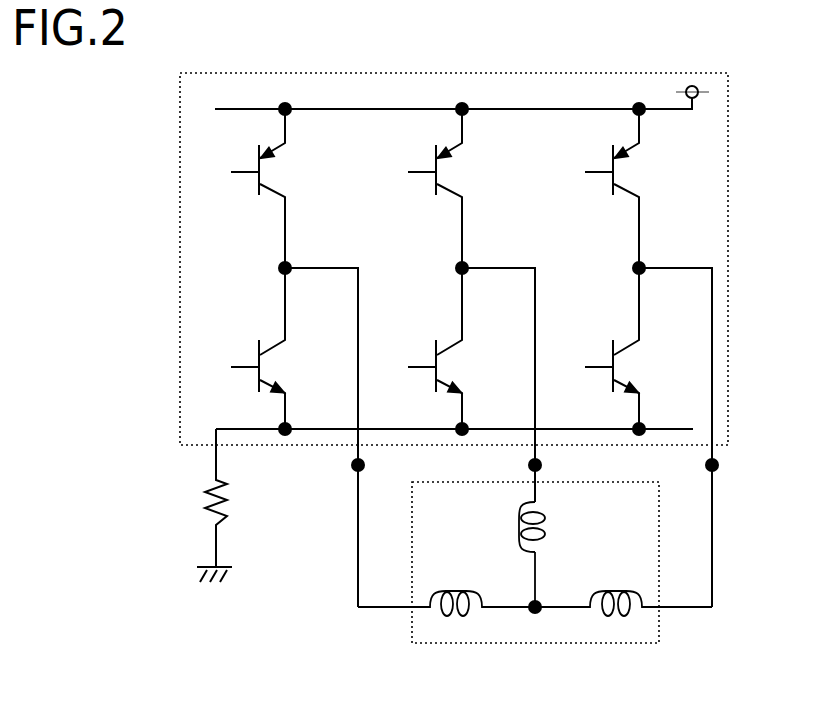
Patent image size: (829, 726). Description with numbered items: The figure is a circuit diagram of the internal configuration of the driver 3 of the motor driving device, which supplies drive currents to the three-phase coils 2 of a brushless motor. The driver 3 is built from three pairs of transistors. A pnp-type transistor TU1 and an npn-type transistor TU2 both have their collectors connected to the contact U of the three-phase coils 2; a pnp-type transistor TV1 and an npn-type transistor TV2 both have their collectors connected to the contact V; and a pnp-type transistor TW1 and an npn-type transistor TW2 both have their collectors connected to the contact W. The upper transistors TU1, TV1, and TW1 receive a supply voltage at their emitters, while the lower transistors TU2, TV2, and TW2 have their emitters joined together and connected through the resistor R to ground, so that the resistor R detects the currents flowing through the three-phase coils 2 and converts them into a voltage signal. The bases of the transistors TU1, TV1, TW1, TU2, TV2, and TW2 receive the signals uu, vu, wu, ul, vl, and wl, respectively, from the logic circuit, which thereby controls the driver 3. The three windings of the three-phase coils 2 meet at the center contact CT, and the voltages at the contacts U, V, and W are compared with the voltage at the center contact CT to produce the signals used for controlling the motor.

The three-phase coils 2 is at (536, 643).
The driver 3 is at (728, 262).
The pnp-type transistor TU1 is at (290, 188).
The npn-type transistor TU2 is at (290, 348).
The pnp-type transistor TV1 is at (463, 188).
The npn-type transistor TV2 is at (467, 348).
The pnp-type transistor TW1 is at (644, 188).
The npn-type transistor TW2 is at (648, 348).
The contact U is at (340, 437).
The contact V is at (517, 385).
The contact W is at (697, 437).
The resistor R is at (224, 505).
The center contact CT is at (552, 583).